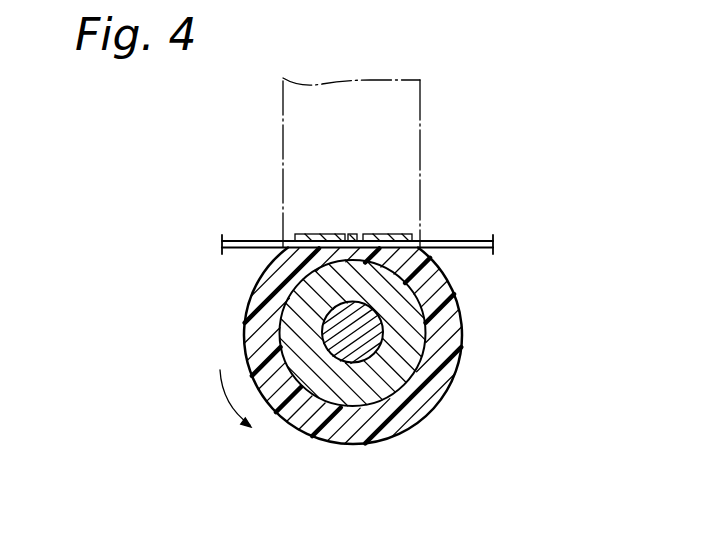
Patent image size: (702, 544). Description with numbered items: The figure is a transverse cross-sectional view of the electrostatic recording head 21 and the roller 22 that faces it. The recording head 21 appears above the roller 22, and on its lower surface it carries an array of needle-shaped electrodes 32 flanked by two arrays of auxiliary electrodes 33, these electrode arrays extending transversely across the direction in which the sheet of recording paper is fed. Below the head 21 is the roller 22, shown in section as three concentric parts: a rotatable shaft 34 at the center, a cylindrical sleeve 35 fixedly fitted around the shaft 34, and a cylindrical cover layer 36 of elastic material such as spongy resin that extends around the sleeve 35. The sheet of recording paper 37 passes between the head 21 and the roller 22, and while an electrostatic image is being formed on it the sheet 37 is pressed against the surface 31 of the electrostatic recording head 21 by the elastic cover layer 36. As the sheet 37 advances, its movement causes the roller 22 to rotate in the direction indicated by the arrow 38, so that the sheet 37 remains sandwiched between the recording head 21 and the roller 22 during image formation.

The electrostatic recording head 21 is at (408, 128).
The roller 22 is at (331, 346).
The surface of the electrostatic recording head 31 is at (377, 234).
The needle-shaped electrodes 32 is at (352, 233).
The auxiliary electrodes 33 is at (317, 234).
The rotatable shaft 34 is at (430, 400).
The cylindrical sleeve 35 is at (403, 348).
The cylindrical cover layer 36 is at (262, 300).
The sheet of recording paper 37 is at (473, 249).
The arrow 38 is at (223, 388).